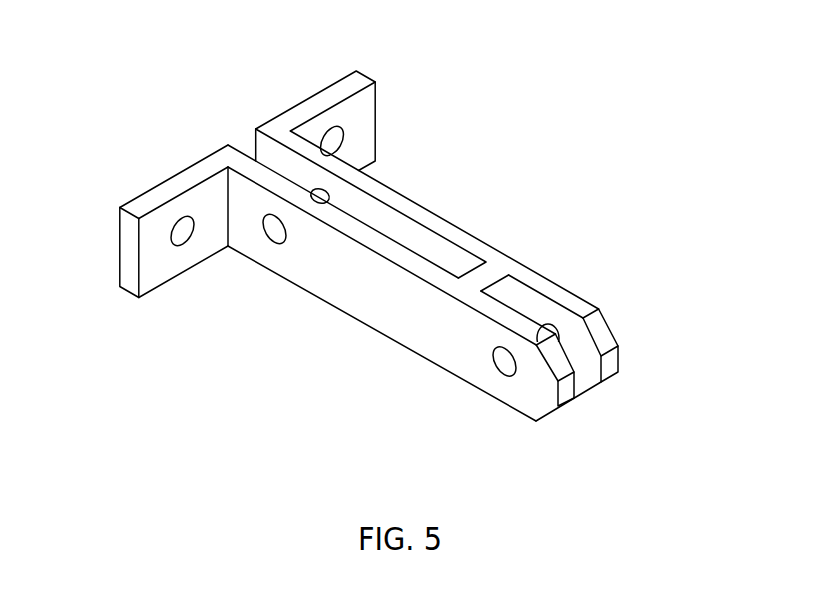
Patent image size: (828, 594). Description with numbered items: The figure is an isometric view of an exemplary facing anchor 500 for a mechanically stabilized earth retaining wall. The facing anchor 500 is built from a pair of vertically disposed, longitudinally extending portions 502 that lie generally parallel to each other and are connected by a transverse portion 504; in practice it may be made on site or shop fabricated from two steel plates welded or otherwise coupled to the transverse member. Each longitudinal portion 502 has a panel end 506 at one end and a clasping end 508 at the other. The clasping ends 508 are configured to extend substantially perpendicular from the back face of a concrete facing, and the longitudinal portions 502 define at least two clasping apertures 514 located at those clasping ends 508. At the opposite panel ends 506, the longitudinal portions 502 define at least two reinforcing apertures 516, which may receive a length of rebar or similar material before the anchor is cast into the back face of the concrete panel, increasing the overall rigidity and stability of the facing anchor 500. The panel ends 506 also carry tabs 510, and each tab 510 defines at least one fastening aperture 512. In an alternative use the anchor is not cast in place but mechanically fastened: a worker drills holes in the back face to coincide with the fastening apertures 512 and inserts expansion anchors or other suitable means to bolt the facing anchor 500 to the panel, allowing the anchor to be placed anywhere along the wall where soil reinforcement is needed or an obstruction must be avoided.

The facing anchor 500 is at (540, 131).
The longitudinally extending portion 502 is at (454, 233).
The transverse portion 504 is at (487, 280).
The panel end 506 is at (288, 148).
The clasping end 508 is at (568, 398).
The tab 510 is at (147, 234).
The fastening aperture 512 is at (333, 141).
The clasping aperture 514 is at (558, 334).
The reinforcing aperture 516 is at (322, 197).